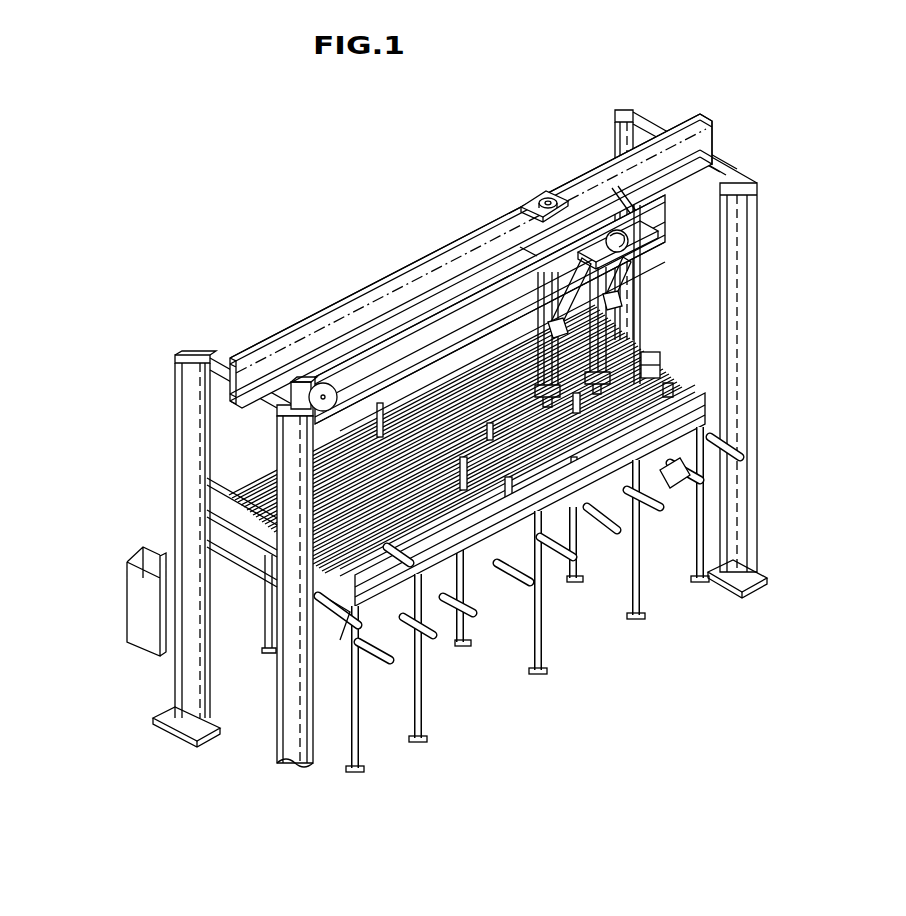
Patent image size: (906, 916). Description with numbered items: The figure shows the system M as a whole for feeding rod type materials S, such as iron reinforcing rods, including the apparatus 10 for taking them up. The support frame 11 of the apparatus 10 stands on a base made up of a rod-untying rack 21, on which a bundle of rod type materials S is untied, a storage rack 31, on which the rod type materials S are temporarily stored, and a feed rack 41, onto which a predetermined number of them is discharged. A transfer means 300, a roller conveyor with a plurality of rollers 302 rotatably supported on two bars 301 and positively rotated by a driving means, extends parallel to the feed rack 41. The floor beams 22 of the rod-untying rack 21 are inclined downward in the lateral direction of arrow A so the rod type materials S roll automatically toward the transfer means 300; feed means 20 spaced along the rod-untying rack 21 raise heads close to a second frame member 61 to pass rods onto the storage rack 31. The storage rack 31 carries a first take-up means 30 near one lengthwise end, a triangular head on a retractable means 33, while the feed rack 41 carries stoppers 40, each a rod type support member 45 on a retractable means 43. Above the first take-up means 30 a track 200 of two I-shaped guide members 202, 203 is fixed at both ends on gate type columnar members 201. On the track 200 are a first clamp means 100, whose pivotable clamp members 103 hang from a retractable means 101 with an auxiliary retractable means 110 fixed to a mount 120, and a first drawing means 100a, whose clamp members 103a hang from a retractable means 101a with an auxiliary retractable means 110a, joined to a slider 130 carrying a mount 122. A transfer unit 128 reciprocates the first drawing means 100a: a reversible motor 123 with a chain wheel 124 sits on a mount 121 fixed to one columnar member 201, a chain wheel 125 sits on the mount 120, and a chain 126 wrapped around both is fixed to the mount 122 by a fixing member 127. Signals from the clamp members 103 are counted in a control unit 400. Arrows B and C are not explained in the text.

The apparatus for taking up rod type materials 10 is at (684, 391).
The support frame 11 is at (252, 582).
The feed means 20 is at (532, 450).
The rod-untying rack 21 is at (230, 546).
The floor beams 22 is at (278, 330).
The first take-up means 30 is at (260, 492).
The storage rack 31 is at (317, 600).
The retractable means 33 is at (593, 520).
The stoppers 40 is at (700, 527).
The feed rack 41 is at (335, 665).
The retractable means 43 is at (670, 507).
The rod type support member 45 is at (708, 420).
The second frame member 61 is at (652, 374).
The first clamp means 100 is at (620, 332).
The first drawing means 100a is at (480, 225).
The retractable means 101 is at (618, 297).
The retractable means 101a is at (523, 330).
The clamp members 103 is at (636, 358).
The clamp members 103a is at (491, 585).
The auxiliary retractable means 110 is at (682, 220).
The auxiliary retractable means 110a is at (533, 313).
The mount 120 is at (632, 232).
The mount 121 is at (273, 440).
The mount 122 is at (640, 262).
The reversible motor 123 is at (300, 400).
The chain wheel 124 is at (307, 418).
The chain wheel 125 is at (617, 217).
The chain 126 is at (383, 370).
The fixing member 127 is at (588, 257).
The transfer unit 128 is at (357, 343).
The slider 130 is at (530, 185).
The track 200 is at (260, 350).
The gate type columnar members 201 is at (172, 697).
The I-shaped guide member 202 is at (176, 358).
The I-shaped guide member 203 is at (233, 368).
The transfer means 300 is at (372, 668).
The bars 301 is at (358, 663).
The rollers 302 is at (380, 663).
The control unit 400 is at (138, 548).
The arrow (lateral direction) A is at (440, 222).
The direction B is at (522, 607).
The belt direction C is at (398, 380).
The system for feeding rod type materials M is at (172, 370).
The rod type materials S is at (435, 540).